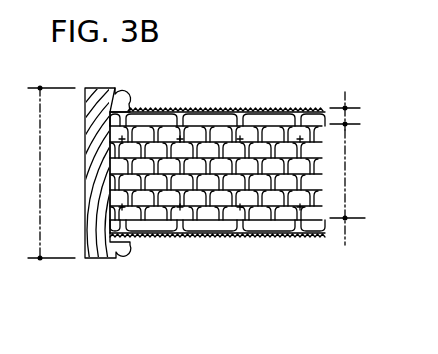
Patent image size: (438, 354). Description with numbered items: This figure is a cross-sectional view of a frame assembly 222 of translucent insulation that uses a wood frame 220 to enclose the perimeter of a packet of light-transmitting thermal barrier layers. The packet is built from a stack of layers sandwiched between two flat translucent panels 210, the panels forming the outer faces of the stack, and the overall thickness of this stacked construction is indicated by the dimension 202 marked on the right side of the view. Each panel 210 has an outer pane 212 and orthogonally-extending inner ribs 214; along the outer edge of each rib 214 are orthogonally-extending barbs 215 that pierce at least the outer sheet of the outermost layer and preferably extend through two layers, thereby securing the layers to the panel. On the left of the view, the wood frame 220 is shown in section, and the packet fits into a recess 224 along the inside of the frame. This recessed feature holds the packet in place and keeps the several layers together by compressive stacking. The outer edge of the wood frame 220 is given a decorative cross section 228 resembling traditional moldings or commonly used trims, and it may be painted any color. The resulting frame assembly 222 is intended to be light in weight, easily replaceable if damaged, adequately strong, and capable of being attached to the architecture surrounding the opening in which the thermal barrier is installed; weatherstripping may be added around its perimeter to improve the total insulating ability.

The overall panel thickness dimension 202 is at (349, 187).
The flat translucent panel 210 is at (345, 92).
The outer pane 212 is at (158, 240).
The inner rib 214 is at (192, 230).
The barb 215 is at (248, 212).
The wood frame 220 is at (121, 275).
The frame assembly 222 is at (46, 173).
The recess 224 is at (118, 166).
The decorative cross section 228 is at (138, 87).